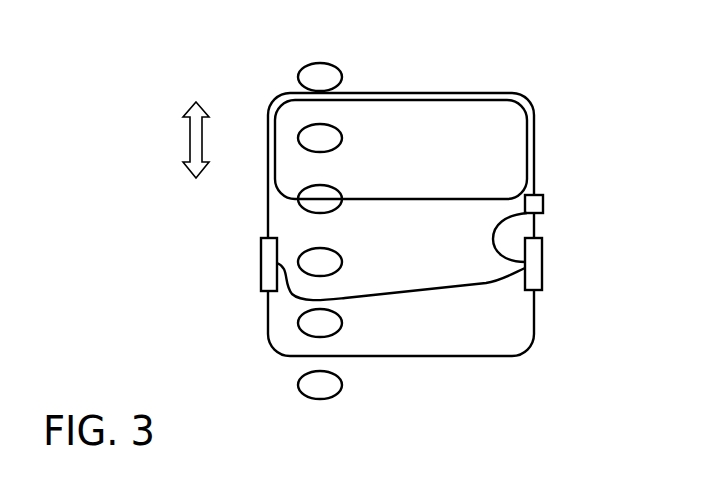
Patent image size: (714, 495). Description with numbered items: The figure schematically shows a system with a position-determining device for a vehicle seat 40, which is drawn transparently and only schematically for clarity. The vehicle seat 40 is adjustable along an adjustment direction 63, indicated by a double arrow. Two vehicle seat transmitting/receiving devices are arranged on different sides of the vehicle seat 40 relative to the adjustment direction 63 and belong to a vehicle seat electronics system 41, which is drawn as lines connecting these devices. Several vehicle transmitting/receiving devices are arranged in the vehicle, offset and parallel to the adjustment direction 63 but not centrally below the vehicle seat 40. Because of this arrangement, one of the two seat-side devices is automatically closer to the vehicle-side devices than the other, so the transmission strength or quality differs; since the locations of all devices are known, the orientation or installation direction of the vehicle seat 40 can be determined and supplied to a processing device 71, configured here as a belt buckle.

The vehicle seat 40 is at (512, 342).
The vehicle seat electronics system 41 is at (493, 239).
The adjustment direction 63 is at (196, 143).
The processing device 71 is at (534, 204).